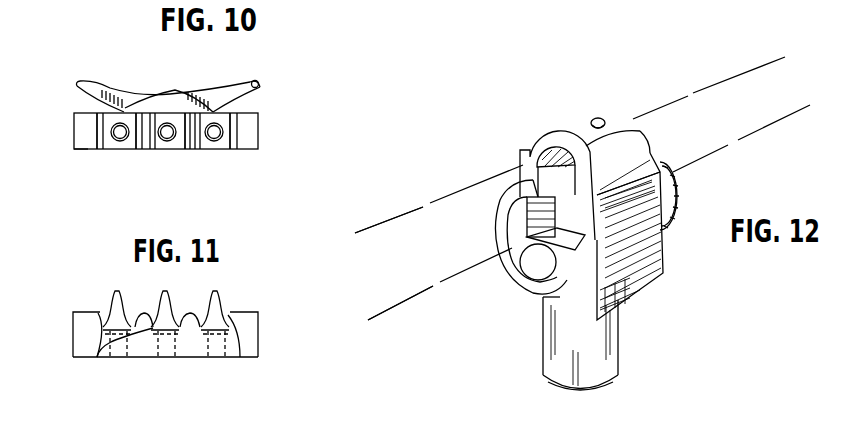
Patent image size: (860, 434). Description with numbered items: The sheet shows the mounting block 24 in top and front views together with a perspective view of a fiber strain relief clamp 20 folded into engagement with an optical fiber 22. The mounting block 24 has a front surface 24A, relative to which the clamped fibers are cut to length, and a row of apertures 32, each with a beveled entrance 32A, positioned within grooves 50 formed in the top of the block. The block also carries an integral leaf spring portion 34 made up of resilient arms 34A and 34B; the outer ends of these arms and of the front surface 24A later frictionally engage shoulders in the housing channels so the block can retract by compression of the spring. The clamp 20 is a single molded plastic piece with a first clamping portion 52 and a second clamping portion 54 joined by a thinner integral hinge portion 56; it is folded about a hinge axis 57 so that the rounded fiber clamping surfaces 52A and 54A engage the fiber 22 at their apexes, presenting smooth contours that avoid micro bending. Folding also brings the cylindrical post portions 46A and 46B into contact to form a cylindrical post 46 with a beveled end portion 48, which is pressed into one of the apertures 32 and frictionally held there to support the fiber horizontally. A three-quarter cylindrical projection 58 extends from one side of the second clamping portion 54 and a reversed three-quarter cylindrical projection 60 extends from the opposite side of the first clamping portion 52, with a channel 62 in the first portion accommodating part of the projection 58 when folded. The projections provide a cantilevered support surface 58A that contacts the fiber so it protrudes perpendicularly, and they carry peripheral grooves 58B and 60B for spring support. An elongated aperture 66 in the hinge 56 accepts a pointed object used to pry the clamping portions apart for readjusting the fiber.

In FIG. 12, the fiber strain relief clamp 20 is at (700, 140).
In FIG. 12, the optical fiber 22 is at (413, 298).
In FIG. 10, the mounting block 24 is at (258, 127).
In FIG. 11, the mounting block 24 is at (258, 335).
In FIG. 10, the front surface 24A is at (88, 152).
In FIG. 10, the aperture 32 is at (214, 125).
In FIG. 11, the aperture 32 is at (212, 357).
In FIG. 10, the beveled entrance 32A is at (213, 142).
In FIG. 11, the beveled entrance 32A is at (237, 357).
In FIG. 10, the leaf spring portion 34 is at (138, 88).
In FIG. 10, the resilient arm 34A is at (95, 82).
In FIG. 10, the resilient arm 34B is at (247, 78).
In FIG. 12, the cylindrical post 46 is at (613, 343).
In FIG. 12, the cylindrical post portion 46A is at (590, 397).
In FIG. 12, the cylindrical post portion 46B is at (543, 338).
In FIG. 12, the beveled end portion 48 is at (607, 392).
In FIG. 10, the groove 50 is at (228, 150).
In FIG. 11, the groove 50 is at (215, 291).
In FIG. 12, the first clamping portion 52 is at (660, 258).
In FIG. 12, the rounded fiber clamping surface 52A is at (636, 115).
In FIG. 12, the second clamping portion 54 is at (513, 157).
In FIG. 12, the rounded fiber clamping surface 54A is at (543, 150).
In FIG. 12, the integral hinge portion 56 is at (565, 128).
In FIG. 12, the hinge axis 57 is at (450, 193).
In FIG. 12, the three-quarter cylindrical projection 58 is at (505, 232).
In FIG. 12, the cantilevered support surface 58A is at (522, 247).
In FIG. 12, the peripheral groove 58B is at (490, 200).
In FIG. 12, the reversed three-quarter cylindrical projection 60 is at (678, 217).
In FIG. 12, the peripheral groove 60B is at (677, 193).
In FIG. 12, the channel 62 is at (607, 233).
In FIG. 12, the elongated aperture 66 is at (595, 118).